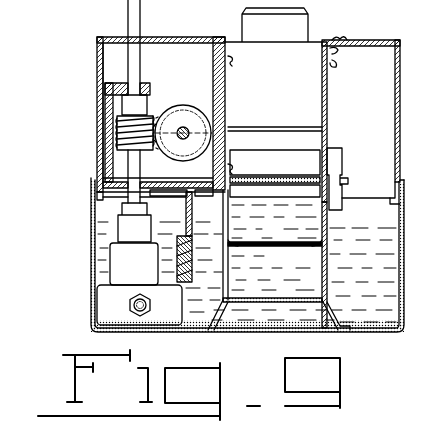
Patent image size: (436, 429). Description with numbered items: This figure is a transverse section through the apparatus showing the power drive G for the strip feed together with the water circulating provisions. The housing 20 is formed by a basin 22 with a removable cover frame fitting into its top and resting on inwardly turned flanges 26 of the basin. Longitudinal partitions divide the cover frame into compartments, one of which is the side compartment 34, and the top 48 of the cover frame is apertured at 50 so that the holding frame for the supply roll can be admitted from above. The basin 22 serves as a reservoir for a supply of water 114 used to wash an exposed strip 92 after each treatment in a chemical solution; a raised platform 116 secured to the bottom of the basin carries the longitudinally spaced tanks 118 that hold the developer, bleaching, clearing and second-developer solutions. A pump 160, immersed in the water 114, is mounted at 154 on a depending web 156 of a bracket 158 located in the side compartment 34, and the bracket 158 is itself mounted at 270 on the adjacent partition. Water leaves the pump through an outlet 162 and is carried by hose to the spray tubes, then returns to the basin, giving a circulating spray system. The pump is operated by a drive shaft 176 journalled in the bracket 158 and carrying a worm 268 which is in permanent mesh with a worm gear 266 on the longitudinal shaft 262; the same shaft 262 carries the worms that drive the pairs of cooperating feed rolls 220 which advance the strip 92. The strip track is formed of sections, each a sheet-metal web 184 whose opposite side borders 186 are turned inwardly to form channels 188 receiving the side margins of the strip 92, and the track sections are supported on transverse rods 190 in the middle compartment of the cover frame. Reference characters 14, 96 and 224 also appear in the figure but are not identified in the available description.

The housing 14 is at (388, 42).
The housing 20 is at (68, 165).
The basin 22 is at (88, 250).
The inwardly turned flanges 26 is at (102, 200).
The side compartment 34 is at (170, 60).
The top 48 is at (362, 40).
The aperture 50 is at (229, 104).
The exposed strip 92 is at (378, 110).
The chamber 96 is at (300, 138).
The water supply 114 is at (360, 240).
The raised platform 116 is at (335, 312).
The tanks 118 is at (328, 220).
The pump mounting 154 is at (175, 255).
The depending web 156 is at (192, 218).
The bracket 158 is at (166, 198).
The pump 160 is at (105, 306).
The outlet 162 is at (151, 304).
The drive shaft 176 is at (137, 174).
The web 184 is at (268, 242).
The side borders 186 is at (232, 247).
The channels 188 is at (253, 247).
The transverse rods 190 is at (320, 250).
The feed rolls 220 is at (258, 153).
The bracket 224 is at (345, 164).
The longitudinal shaft 262 is at (186, 125).
The worm gear 266 is at (189, 105).
The worm 268 is at (118, 124).
The bracket mounting 270 is at (233, 62).
The power drive G is at (118, 103).